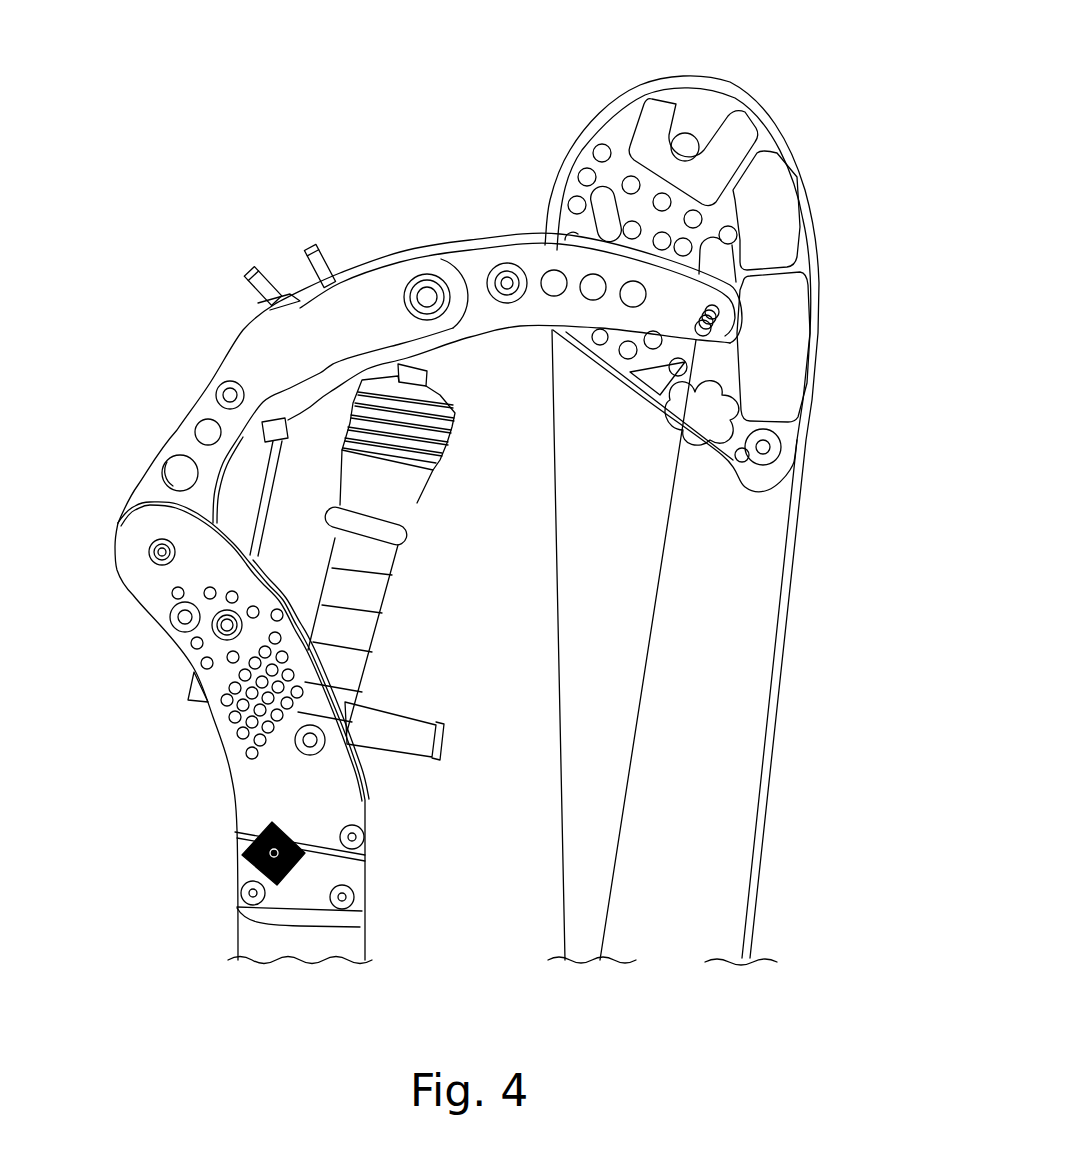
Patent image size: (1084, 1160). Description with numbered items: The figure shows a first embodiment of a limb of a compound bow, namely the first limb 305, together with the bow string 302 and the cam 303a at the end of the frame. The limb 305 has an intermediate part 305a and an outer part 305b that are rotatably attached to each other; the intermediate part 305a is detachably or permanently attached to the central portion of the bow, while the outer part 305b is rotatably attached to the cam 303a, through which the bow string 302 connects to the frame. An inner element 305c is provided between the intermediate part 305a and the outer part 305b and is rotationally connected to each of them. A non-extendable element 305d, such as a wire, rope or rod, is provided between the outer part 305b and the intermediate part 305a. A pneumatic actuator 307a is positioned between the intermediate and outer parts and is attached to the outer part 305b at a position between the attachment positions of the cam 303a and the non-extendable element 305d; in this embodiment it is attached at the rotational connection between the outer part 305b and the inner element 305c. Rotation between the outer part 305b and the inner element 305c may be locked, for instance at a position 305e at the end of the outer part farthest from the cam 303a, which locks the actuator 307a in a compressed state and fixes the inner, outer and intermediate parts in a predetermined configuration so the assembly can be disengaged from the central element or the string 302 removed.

The bow string 302 is at (763, 805).
The cam 303a is at (822, 363).
The first limb 305 is at (247, 150).
The intermediate part 305a is at (195, 655).
The outer part 305b is at (487, 233).
The inner element 305c is at (200, 413).
The non-extendable element 305d is at (263, 490).
The locking position 305e is at (273, 392).
The pneumatic actuator 307a is at (428, 470).